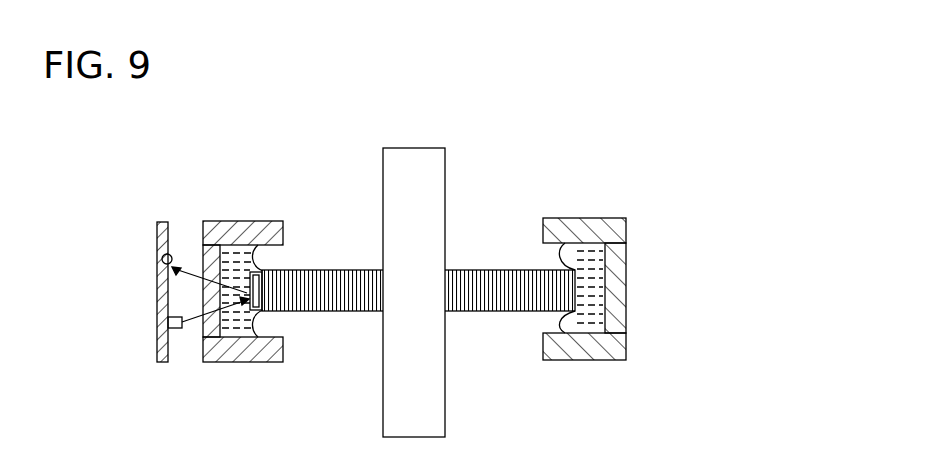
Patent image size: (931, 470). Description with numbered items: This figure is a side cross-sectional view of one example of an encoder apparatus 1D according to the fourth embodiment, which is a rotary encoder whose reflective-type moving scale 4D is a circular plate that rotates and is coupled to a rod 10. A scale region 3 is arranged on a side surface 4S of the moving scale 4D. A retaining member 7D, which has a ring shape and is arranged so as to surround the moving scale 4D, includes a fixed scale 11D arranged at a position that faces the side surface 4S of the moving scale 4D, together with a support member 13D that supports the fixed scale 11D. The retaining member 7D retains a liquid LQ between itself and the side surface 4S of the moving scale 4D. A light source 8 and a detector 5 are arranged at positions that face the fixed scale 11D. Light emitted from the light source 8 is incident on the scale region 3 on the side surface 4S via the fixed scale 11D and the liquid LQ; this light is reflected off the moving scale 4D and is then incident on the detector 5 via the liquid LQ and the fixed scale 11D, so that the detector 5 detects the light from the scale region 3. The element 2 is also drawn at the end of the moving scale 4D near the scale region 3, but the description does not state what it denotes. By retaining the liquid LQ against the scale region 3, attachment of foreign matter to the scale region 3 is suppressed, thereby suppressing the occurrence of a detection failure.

The encoder apparatus 1D is at (531, 171).
The shaft end portion 2 is at (250, 296).
The scale region 3 is at (259, 272).
The moving scale 4D is at (470, 269).
The side surface 4S is at (251, 285).
The detector 5 is at (162, 259).
The retaining member 7D is at (222, 221).
The light source 8 is at (177, 329).
The rod 10 is at (445, 167).
The fixed scale 11D is at (206, 275).
The support member 13D is at (208, 363).
The liquid LQ is at (251, 325).